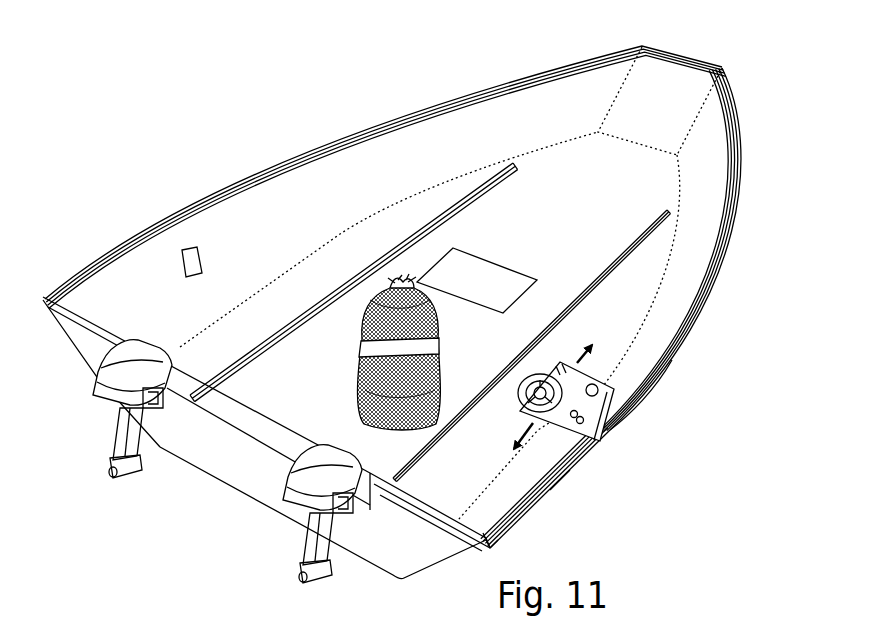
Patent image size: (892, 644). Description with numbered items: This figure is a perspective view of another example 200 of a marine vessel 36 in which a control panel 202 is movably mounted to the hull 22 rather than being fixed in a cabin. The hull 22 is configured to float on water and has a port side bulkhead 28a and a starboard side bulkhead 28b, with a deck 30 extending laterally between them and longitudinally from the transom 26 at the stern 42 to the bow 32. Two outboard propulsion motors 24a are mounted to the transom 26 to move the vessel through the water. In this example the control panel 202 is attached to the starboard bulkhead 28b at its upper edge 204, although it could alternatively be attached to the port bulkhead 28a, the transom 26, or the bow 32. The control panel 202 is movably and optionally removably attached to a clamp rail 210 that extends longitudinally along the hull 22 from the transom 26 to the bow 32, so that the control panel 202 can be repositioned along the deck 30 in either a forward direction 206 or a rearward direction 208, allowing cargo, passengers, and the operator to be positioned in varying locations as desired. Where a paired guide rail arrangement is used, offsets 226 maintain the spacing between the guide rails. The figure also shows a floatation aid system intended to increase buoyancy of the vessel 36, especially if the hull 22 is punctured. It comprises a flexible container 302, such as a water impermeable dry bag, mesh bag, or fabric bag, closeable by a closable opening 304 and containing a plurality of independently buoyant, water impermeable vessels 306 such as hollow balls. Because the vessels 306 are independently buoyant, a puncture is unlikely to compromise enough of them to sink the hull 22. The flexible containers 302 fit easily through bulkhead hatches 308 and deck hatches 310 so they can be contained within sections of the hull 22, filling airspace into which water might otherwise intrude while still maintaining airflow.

The example 200 is at (680, 518).
The control panel 202 is at (605, 425).
The upper edge 204 is at (698, 313).
The forward direction 206 is at (577, 358).
The rearward direction 208 is at (530, 427).
The clamp rail 210 is at (580, 467).
The hull 22 is at (643, 391).
The offsets 226 is at (503, 538).
The propulsion motor 24a is at (123, 452).
The transom 26 is at (218, 472).
The port side bulkhead 28a is at (157, 224).
The starboard side bulkhead 28b is at (560, 497).
The deck 30 is at (645, 257).
The flexible container 302 is at (366, 394).
The closable opening 304 is at (405, 281).
The water impermeable vessels 306 is at (424, 372).
The bulkhead hatch 308 is at (201, 259).
The deck hatch 310 is at (518, 268).
The bow 32 is at (708, 113).
The marine vessel 36 is at (525, 63).
The stern 42 is at (380, 547).